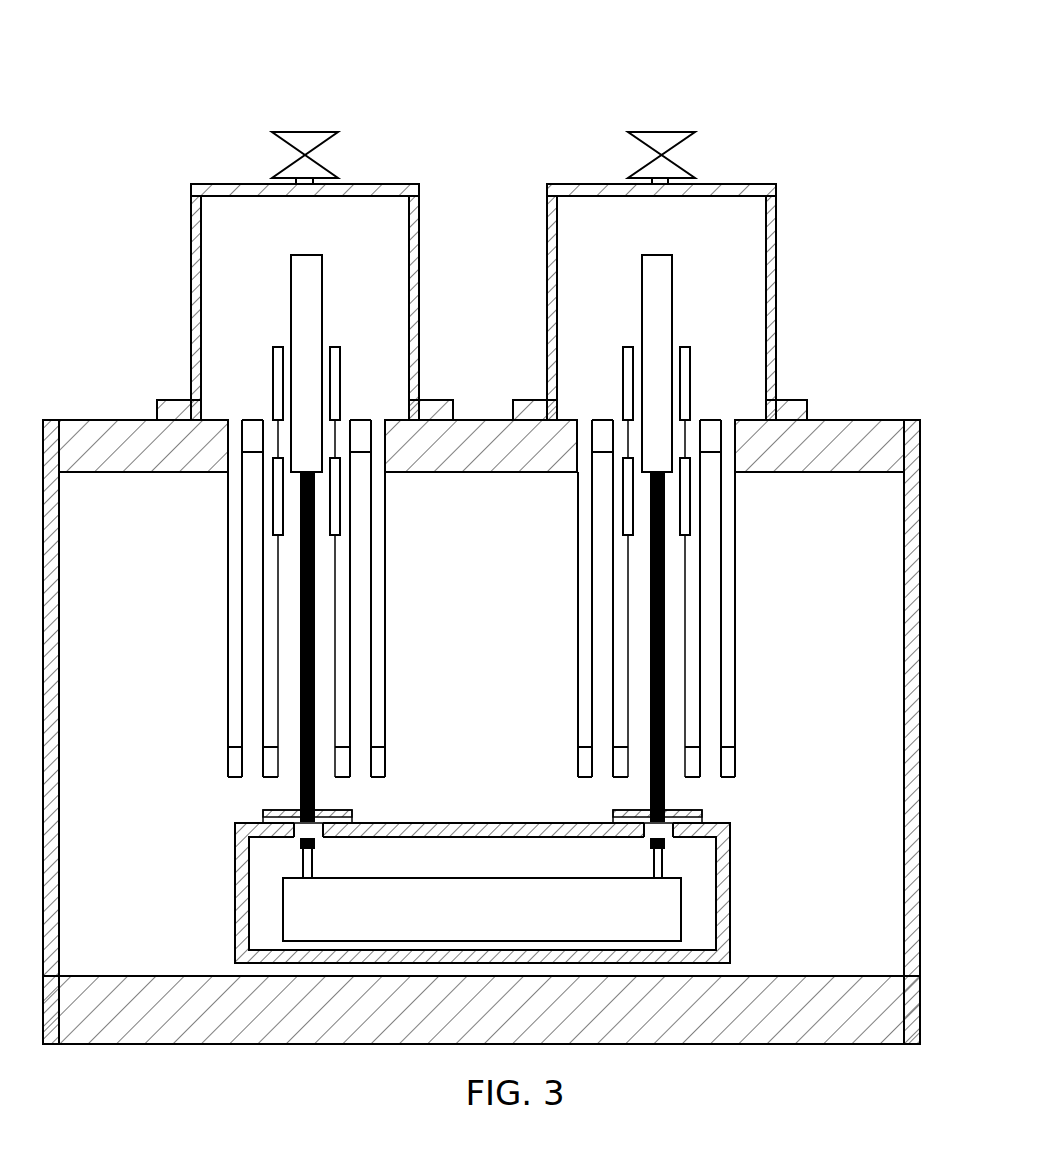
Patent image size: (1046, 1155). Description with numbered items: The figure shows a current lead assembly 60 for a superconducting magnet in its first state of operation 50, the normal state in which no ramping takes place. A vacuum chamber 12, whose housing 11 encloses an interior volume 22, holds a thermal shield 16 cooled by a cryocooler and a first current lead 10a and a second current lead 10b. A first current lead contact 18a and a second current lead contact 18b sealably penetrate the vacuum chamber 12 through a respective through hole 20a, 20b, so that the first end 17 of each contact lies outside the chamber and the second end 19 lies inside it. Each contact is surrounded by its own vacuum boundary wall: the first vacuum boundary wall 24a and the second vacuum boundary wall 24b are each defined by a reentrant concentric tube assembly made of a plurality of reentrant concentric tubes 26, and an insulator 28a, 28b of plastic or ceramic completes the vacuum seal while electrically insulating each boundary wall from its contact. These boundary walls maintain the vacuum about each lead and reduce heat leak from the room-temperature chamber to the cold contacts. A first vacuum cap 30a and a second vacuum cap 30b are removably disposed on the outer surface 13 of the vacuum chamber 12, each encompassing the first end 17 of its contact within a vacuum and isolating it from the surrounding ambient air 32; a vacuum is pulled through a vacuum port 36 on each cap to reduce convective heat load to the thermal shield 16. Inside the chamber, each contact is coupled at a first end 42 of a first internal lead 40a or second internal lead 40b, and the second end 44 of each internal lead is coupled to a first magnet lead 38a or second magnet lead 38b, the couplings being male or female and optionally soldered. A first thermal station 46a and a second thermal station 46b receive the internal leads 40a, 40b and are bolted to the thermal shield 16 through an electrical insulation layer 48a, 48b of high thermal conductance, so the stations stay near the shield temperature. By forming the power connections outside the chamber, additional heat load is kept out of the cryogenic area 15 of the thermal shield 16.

The current lead assembly 60 is at (245, 50).
The vacuum port 36 is at (306, 131).
The first vacuum cap 30a is at (262, 184).
The second vacuum cap 30b is at (606, 184).
The surrounding ambient air 32 is at (858, 167).
The first current lead 10a is at (178, 272).
The second current lead 10b is at (784, 296).
The first end 17 is at (292, 278).
The first current lead contact 18a is at (323, 284).
The second current lead contact 18b is at (675, 296).
The first state of operation 50 is at (842, 320).
The through hole 20a is at (258, 402).
The through hole 20b is at (708, 402).
The insulator 28a is at (345, 358).
The insulator 28b is at (625, 390).
The second end 19 is at (322, 440).
The outer surface 13 is at (92, 420).
The vacuum chamber 12 is at (872, 420).
The first end 42 is at (313, 492).
The interior volume 22 is at (843, 517).
The housing 11 is at (920, 558).
The reentrant concentric tubes 26 is at (228, 686).
The first vacuum boundary wall 24a is at (388, 667).
The second vacuum boundary wall 24b is at (577, 706).
The first internal lead 40a is at (300, 792).
The second internal lead 40b is at (650, 792).
The first thermal station 46a is at (290, 808).
The second thermal station 46b is at (687, 808).
The electrical insulation layer 48a is at (265, 820).
The electrical insulation layer 48b is at (702, 817).
The second end 44 is at (302, 845).
The first magnet lead 38a is at (302, 863).
The second magnet lead 38b is at (662, 867).
The cryogenic area 15 is at (493, 869).
The thermal shield 16 is at (730, 912).